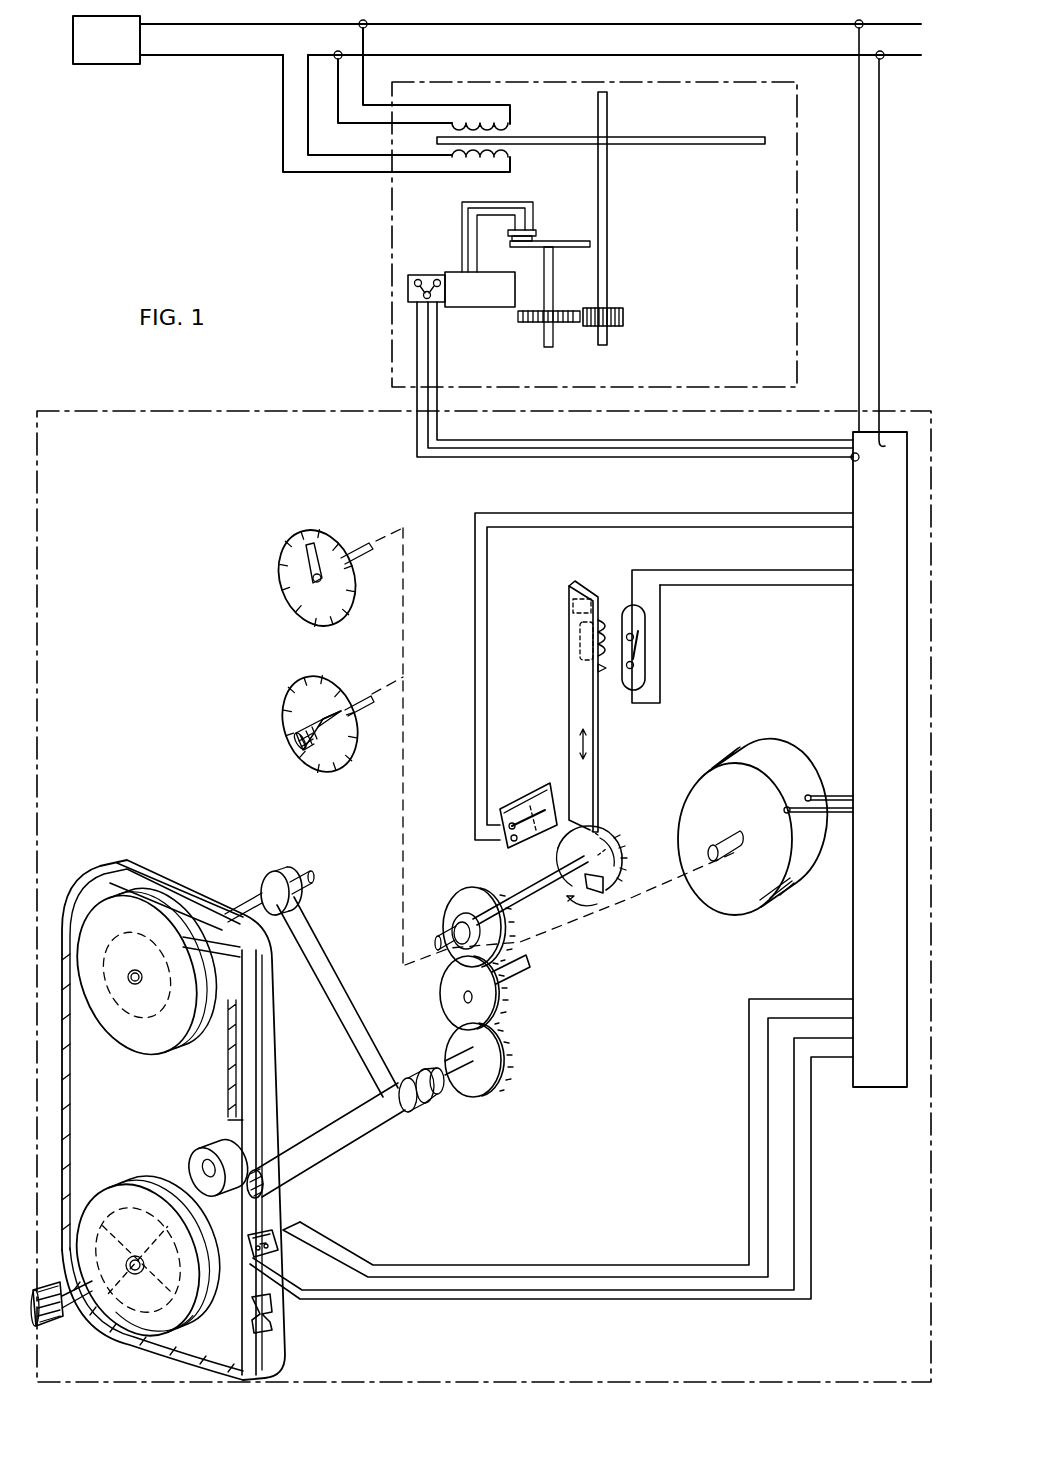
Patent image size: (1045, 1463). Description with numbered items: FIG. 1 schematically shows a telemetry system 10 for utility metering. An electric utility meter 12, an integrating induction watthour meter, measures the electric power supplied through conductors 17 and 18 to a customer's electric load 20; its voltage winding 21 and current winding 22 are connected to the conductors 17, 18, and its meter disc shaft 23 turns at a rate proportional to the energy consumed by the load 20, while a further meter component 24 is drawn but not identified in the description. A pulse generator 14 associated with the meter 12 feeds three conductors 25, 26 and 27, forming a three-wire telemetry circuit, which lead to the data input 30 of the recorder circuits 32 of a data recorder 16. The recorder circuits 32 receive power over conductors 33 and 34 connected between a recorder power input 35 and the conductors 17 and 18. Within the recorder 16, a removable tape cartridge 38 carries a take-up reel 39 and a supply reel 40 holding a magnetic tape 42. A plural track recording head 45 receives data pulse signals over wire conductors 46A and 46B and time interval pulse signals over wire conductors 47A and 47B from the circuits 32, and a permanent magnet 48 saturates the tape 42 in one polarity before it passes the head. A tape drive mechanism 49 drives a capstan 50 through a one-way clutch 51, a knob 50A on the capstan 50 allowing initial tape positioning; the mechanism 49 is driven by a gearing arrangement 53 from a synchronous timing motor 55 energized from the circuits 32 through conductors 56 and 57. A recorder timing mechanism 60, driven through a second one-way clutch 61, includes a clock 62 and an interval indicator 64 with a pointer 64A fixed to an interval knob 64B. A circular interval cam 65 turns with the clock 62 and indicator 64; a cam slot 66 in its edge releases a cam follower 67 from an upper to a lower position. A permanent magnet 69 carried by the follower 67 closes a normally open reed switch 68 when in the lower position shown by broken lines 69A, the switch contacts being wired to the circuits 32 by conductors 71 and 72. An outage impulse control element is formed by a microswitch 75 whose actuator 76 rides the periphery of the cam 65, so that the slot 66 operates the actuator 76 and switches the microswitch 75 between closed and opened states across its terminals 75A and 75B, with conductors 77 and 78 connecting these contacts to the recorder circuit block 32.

The telemetry system 10 is at (336, 250).
The electric utility meter 12 is at (797, 175).
The pulse generator 14 is at (468, 300).
The data recorder 16 is at (82, 410).
The conductor 17 is at (705, 24).
The conductor 18 is at (760, 55).
The electric load 20 is at (94, 53).
The voltage winding 21 is at (511, 121).
The current winding 22 is at (512, 159).
The meter disc shaft 23 is at (608, 197).
The gear train 24 is at (547, 250).
The conductor 25 is at (504, 440).
The conductor 26 is at (490, 457).
The conductor 27 is at (557, 450).
The data input 30 is at (850, 458).
The recorder circuits 32 is at (893, 717).
The conductor 33 is at (859, 241).
The conductor 34 is at (882, 208).
The recorder power input 35 is at (872, 461).
The tape cartridge 38 is at (110, 1124).
The take-up reel 39 is at (156, 1036).
The supply reel 40 is at (145, 1185).
The magnetic tape 42 is at (250, 1044).
The plural track recording head 45 is at (277, 1250).
The wire conductor 46A is at (505, 1292).
The wire conductor 46B is at (586, 1301).
The wire conductor 47A is at (482, 1265).
The wire conductor 47B is at (586, 1276).
The permanent magnet 48 is at (270, 1319).
The tape drive mechanism 49 is at (378, 1047).
The capstan 50 is at (290, 1170).
The knob 50A is at (46, 1321).
The one-way clutch 51 is at (446, 1092).
The gearing arrangement 53 is at (517, 1018).
The synchronous timing motor 55 is at (722, 878).
The conductor 56 is at (835, 795).
The conductor 57 is at (840, 814).
The recorder timing mechanism 60 is at (643, 742).
The second one-way clutch 61 is at (455, 931).
The clock 62 is at (330, 530).
The interval indicator 64 is at (352, 728).
The pointer 64A is at (323, 715).
The interval knob 64B is at (298, 738).
The circular interval cam 65 is at (618, 850).
The cam slot 66 is at (601, 882).
The cam follower 67 is at (585, 778).
The reed switch 68 is at (646, 665).
The permanent magnet 69 is at (607, 620).
The broken lines 69A is at (598, 668).
The conductor 71 is at (800, 586).
The conductor 72 is at (697, 568).
The microswitch 75 is at (548, 790).
The switch terminal 75A is at (510, 847).
The switch terminal 75B is at (511, 825).
The actuator 76 is at (548, 844).
The conductor 77 is at (492, 716).
The conductor 78 is at (475, 735).